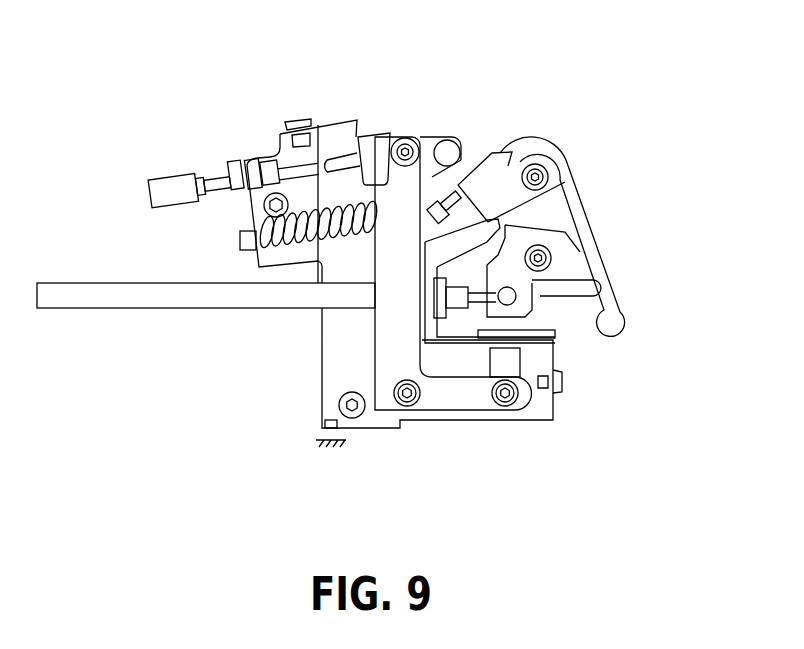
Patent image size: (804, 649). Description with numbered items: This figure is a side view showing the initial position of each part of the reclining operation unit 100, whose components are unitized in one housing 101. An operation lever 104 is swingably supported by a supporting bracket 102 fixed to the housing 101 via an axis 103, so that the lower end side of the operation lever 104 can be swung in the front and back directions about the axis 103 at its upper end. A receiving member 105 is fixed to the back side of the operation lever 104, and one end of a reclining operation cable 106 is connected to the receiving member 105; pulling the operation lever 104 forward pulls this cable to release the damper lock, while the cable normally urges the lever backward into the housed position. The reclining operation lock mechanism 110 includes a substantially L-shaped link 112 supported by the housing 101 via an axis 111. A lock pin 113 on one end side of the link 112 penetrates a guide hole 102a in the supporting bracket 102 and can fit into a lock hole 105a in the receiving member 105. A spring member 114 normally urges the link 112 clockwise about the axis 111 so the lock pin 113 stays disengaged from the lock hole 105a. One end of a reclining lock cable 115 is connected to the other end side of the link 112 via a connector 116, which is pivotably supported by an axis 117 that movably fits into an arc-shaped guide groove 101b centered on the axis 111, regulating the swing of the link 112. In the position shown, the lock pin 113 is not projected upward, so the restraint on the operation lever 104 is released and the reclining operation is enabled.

The reclining operation unit 100 is at (527, 84).
The housing 101 is at (320, 400).
The guide groove 101b is at (355, 121).
The supporting bracket 102 is at (478, 175).
The guide hole 102a is at (505, 327).
The axis 103 is at (548, 168).
The operation lever 104 is at (592, 222).
The receiving member 105 is at (577, 248).
The lock hole 105a is at (560, 300).
The reclining operation cable 106 is at (133, 310).
The reclining operation lock mechanism 110 is at (243, 138).
The axis 111 is at (407, 396).
The link 112 is at (375, 337).
The lock pin 113 is at (517, 365).
The spring member 114 is at (318, 128).
The reclining lock cable 115 is at (163, 178).
The connector 116 is at (371, 134).
The axis 117 is at (406, 137).